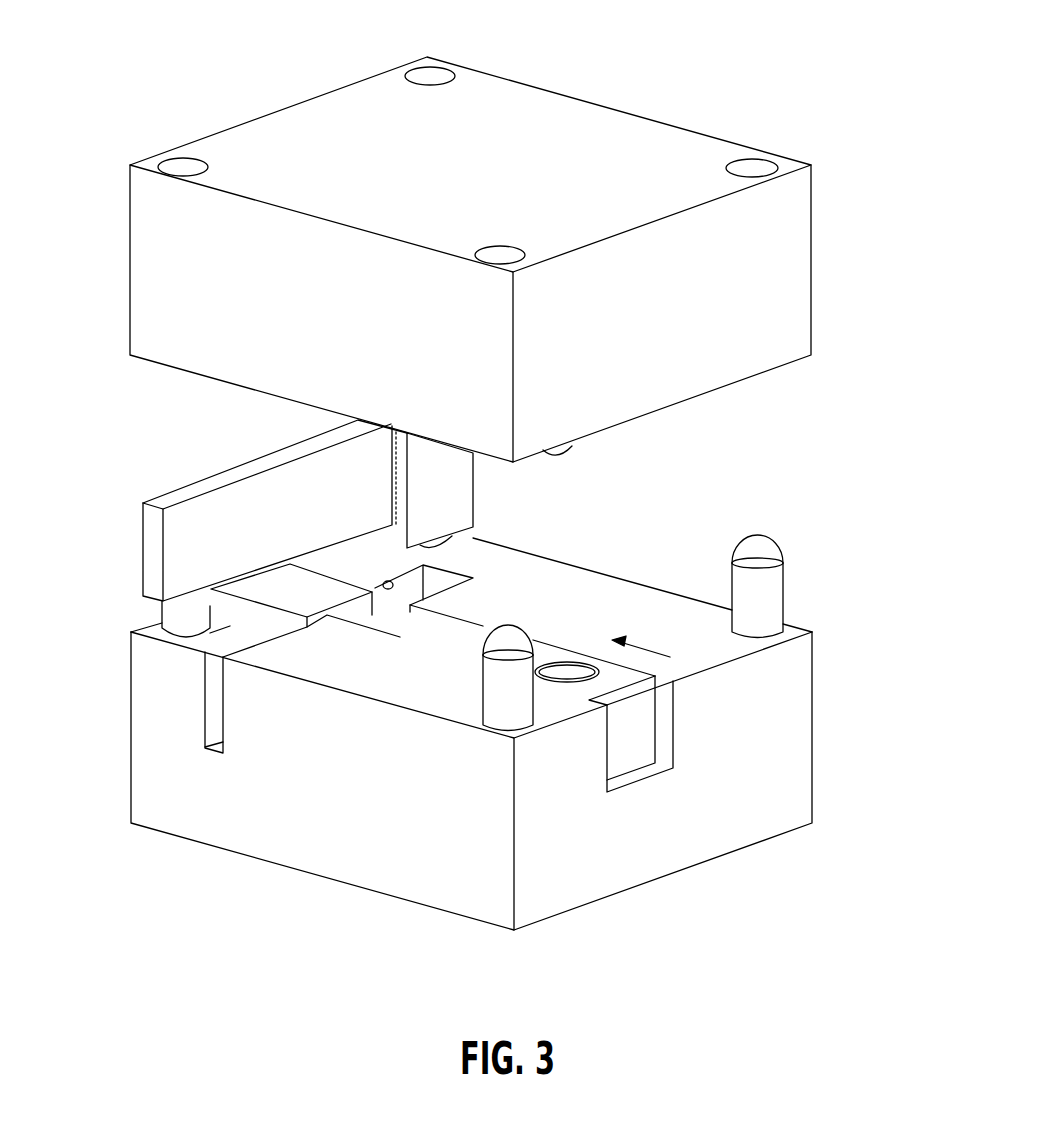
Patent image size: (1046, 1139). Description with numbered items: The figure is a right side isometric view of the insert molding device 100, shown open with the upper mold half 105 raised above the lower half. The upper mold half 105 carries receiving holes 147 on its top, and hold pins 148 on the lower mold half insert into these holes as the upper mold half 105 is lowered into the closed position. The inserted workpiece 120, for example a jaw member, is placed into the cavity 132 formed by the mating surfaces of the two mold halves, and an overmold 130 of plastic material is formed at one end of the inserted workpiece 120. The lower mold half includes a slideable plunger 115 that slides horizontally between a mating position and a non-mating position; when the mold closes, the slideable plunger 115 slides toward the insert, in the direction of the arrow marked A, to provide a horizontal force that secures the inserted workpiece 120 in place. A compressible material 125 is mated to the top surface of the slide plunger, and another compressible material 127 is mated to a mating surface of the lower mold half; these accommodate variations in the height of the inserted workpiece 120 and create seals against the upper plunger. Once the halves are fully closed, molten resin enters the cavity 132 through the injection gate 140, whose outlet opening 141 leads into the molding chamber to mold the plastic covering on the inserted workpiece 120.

The insert molding device 100 is at (678, 59).
The upper mold half 105 is at (812, 231).
The receiving holes 147 is at (752, 173).
The inserted workpiece 120 is at (150, 547).
The overmold 130 is at (467, 472).
The compressible material 125 is at (465, 637).
The cavity 132 is at (212, 718).
The injection gate 140 is at (290, 592).
The compressible material 127 is at (352, 570).
The outlet opening 141 is at (395, 585).
The slideable plunger 115 is at (580, 657).
The hold pins 148 is at (778, 587).